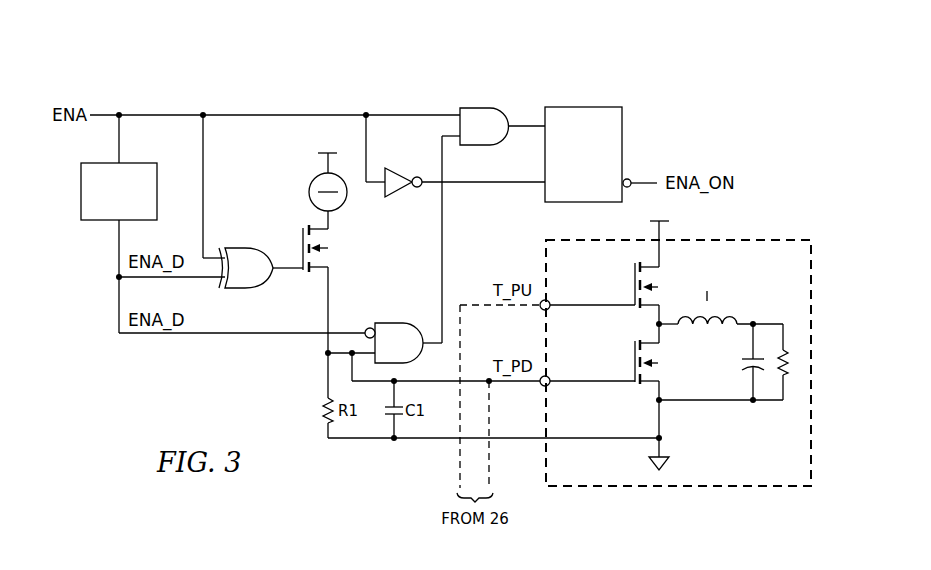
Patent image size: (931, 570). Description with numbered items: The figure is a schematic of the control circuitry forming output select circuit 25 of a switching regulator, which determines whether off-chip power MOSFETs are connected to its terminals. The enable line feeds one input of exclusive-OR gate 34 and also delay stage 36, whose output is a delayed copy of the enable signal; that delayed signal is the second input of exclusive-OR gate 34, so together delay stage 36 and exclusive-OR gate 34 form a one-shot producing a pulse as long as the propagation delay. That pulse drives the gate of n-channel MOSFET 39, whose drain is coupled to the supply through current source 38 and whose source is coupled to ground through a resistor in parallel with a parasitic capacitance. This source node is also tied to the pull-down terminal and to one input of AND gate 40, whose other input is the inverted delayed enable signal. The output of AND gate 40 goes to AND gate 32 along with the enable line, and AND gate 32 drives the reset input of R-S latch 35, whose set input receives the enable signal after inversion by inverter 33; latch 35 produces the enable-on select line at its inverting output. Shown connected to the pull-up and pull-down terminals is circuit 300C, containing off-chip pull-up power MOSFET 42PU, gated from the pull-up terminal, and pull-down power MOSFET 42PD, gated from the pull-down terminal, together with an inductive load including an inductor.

The output select circuit 25 is at (686, 91).
The AND gate 32 is at (484, 108).
The inverter 33 is at (398, 172).
The exclusive-OR gate 34 is at (256, 287).
The R-S latch 35 is at (585, 107).
The delay stage 36 is at (101, 222).
The current source 38 is at (309, 185).
The n-channel MOSFET 39 is at (302, 240).
The AND gate 40 is at (398, 323).
The pull-up power MOSFET 42PU is at (633, 278).
The pull-down power MOSFET 42PD is at (633, 352).
The circuit 300C is at (678, 382).